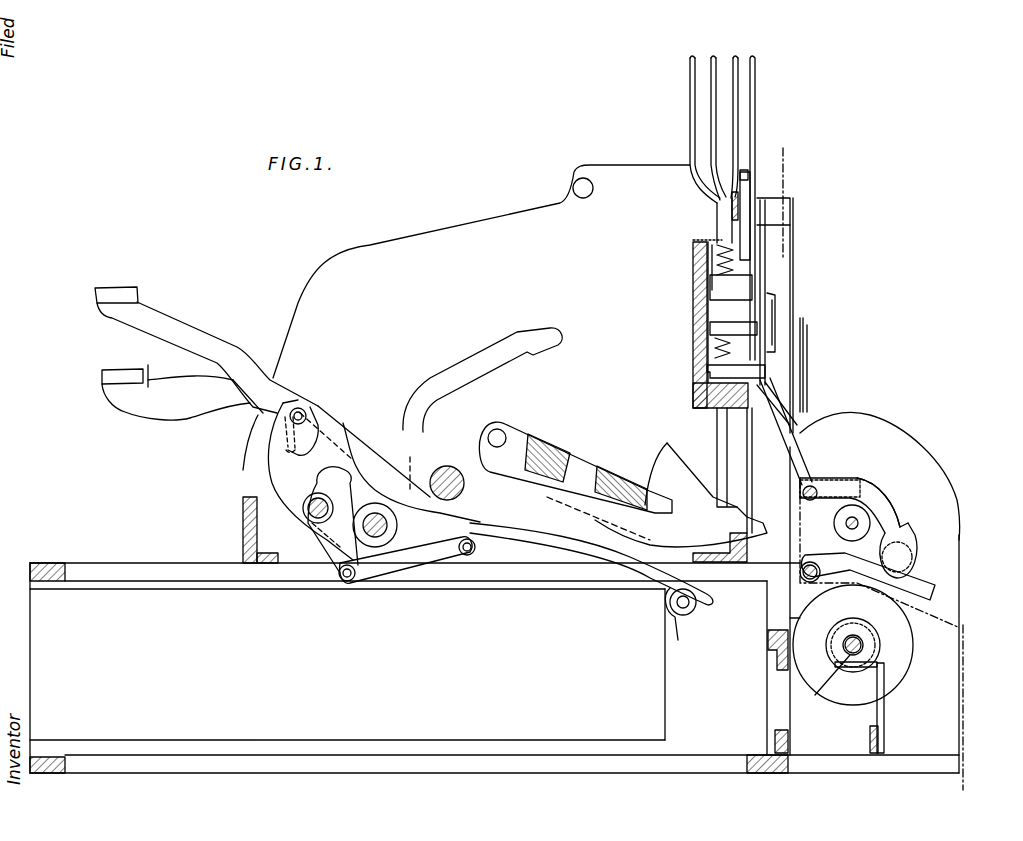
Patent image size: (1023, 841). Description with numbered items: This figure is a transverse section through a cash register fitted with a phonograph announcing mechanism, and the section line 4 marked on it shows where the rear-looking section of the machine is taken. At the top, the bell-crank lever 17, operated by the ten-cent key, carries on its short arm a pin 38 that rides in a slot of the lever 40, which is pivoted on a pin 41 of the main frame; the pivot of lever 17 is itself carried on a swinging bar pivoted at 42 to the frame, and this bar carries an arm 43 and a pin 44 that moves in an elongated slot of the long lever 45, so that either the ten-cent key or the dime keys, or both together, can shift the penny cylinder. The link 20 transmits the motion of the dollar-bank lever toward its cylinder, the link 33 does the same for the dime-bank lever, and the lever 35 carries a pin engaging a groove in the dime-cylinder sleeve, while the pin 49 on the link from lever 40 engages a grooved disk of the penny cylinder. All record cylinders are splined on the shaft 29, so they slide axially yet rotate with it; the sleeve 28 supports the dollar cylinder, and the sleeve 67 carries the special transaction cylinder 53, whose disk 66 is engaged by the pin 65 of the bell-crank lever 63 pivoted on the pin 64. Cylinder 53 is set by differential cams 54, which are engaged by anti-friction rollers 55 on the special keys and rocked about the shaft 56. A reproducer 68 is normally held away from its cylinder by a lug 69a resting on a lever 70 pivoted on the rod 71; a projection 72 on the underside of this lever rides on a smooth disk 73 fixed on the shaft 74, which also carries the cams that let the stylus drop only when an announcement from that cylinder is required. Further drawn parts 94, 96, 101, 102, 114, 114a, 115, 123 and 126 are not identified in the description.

The section line 4 is at (855, 427).
The bell-crank lever 17 is at (757, 175).
The link 20 is at (716, 208).
The sleeve 28 is at (790, 620).
The shaft 29 is at (862, 642).
The link 33 is at (731, 214).
The lever 35 is at (805, 437).
The pin 38 is at (750, 182).
The lever 40 is at (170, 340).
The pin 41 is at (720, 326).
The swinging-bar pivot 42 is at (580, 468).
The arm 43 is at (705, 175).
The pin 44 is at (448, 466).
The long lever 45 is at (712, 260).
The pin 49 is at (840, 628).
The special transaction cylinder 53 is at (848, 697).
The differential cams 54 is at (277, 468).
The anti-friction rollers 55 is at (304, 412).
The shaft 56 is at (397, 523).
The bell-crank lever 63 is at (880, 745).
The pin 64 is at (811, 563).
The pin 65 is at (822, 685).
The disk 66 is at (878, 646).
The sleeve 67 is at (843, 642).
The reproducer 68 is at (918, 590).
The lug 69a is at (910, 530).
The lever 70 is at (876, 510).
The rod 71 is at (815, 489).
The projection 72 is at (854, 505).
The disk 73 is at (834, 527).
The shaft 74 is at (855, 520).
The rod 94 is at (800, 452).
The bracket 96 is at (770, 318).
The pin 101 is at (318, 524).
The link 102 is at (420, 570).
The pivot 114 is at (686, 616).
The link 114a is at (337, 553).
The table 115 is at (494, 610).
The lever 123 is at (657, 563).
The arm 126 is at (638, 486).